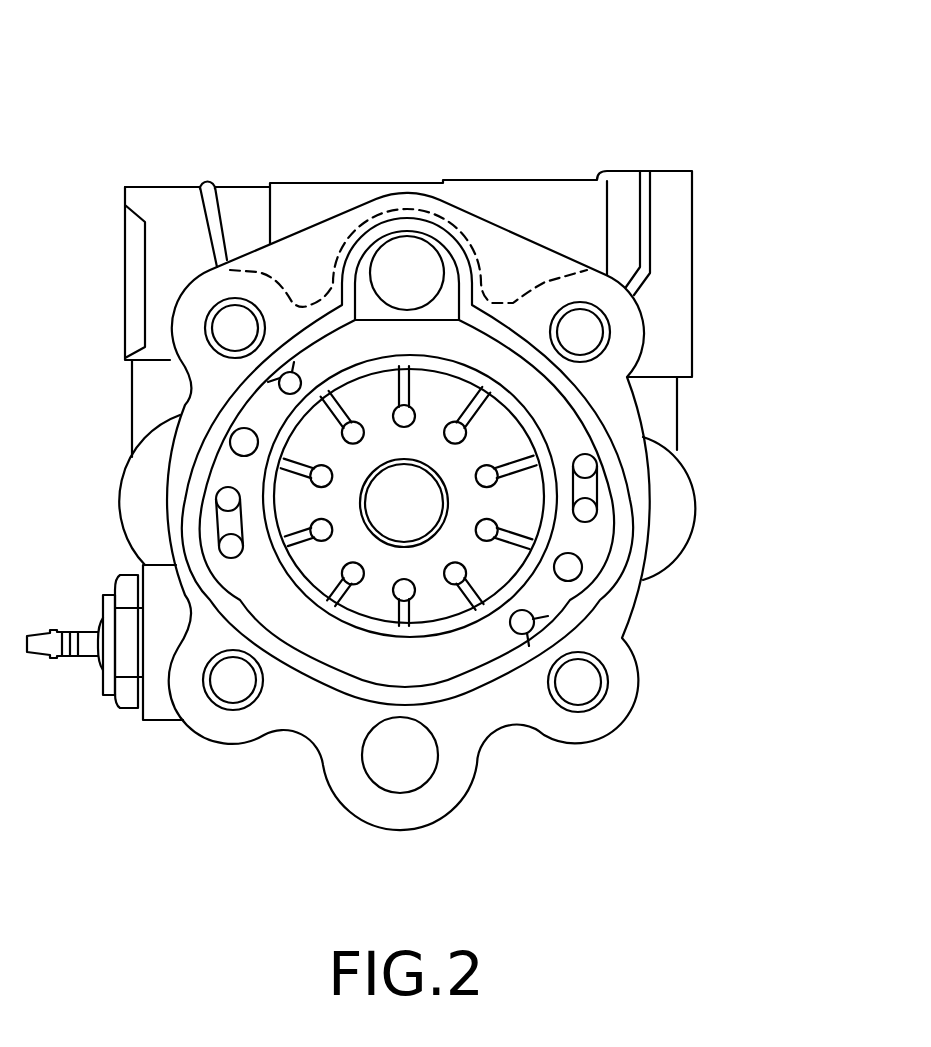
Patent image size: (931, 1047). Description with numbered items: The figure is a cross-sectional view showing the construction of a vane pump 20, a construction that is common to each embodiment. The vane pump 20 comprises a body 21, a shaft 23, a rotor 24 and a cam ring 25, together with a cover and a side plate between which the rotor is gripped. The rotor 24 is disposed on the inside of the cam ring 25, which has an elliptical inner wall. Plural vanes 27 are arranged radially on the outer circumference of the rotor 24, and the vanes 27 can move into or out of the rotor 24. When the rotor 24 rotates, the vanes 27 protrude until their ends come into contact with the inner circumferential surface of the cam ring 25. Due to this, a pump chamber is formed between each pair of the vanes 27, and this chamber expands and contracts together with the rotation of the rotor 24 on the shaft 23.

The vane pump 20 is at (177, 159).
The body 21 is at (692, 250).
The shaft 23 is at (407, 523).
The rotor 24 is at (507, 517).
The cam ring 25 is at (553, 405).
The vanes 27 is at (540, 460).